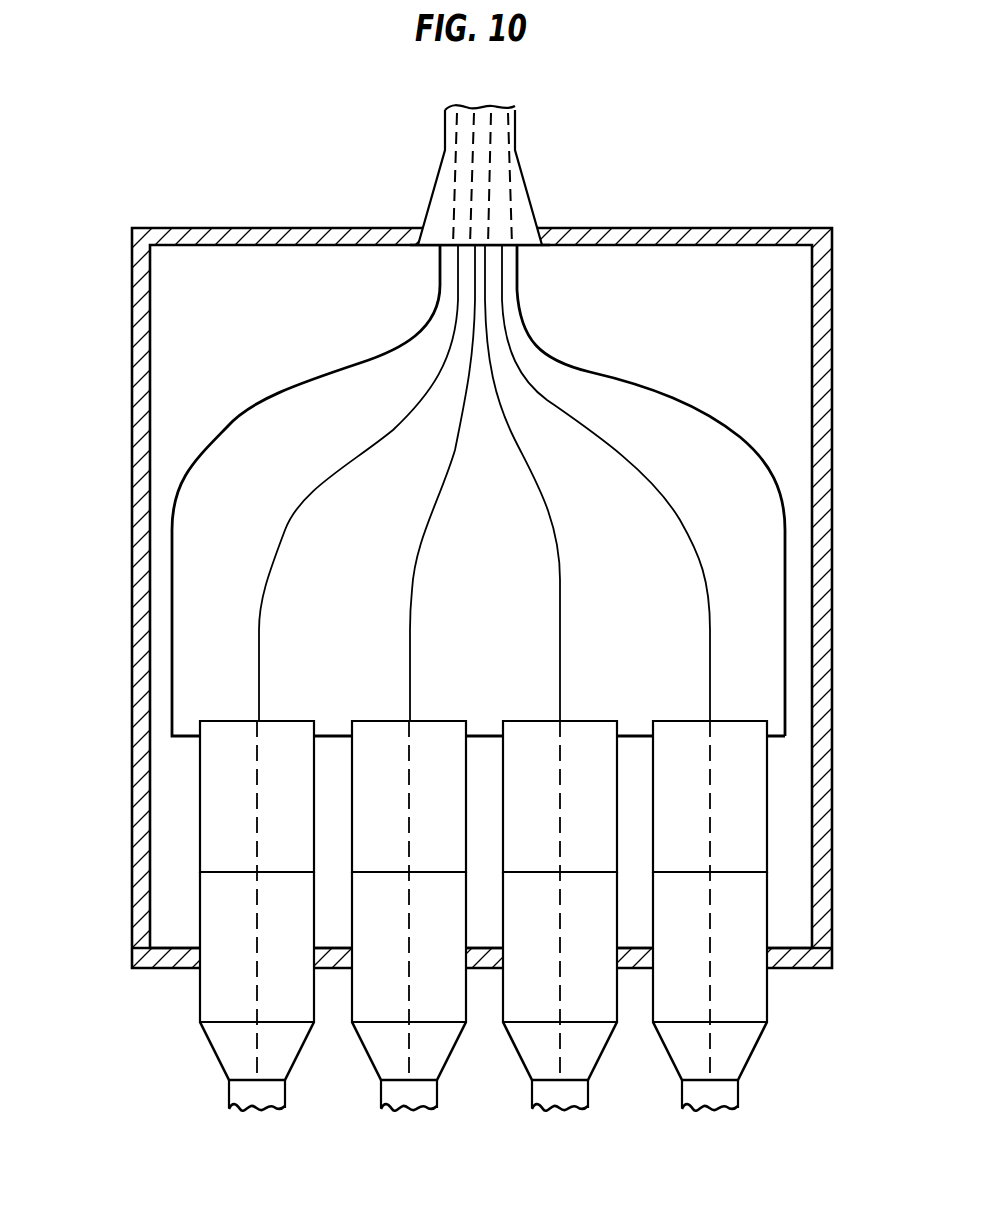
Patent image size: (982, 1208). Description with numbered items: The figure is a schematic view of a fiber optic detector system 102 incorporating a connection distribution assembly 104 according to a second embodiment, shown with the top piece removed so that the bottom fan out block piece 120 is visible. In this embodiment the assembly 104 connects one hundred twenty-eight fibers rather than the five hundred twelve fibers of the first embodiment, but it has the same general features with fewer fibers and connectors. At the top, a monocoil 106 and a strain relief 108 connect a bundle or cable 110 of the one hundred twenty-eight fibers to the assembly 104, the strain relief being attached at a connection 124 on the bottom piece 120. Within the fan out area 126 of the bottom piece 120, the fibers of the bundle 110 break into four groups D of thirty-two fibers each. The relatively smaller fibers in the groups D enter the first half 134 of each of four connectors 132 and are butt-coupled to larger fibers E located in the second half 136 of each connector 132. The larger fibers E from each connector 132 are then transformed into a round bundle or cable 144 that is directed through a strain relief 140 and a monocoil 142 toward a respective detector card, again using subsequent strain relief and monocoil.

The fiber optic detector system 102 is at (144, 127).
The connection distribution assembly 104 is at (108, 672).
The monocoil 106 is at (447, 140).
The strain relief 108 is at (533, 206).
The bundle or cable 110 is at (455, 122).
The bottom fan out block piece 120 is at (792, 752).
The connection for a strain relief 124 is at (424, 248).
The fan out area 126 is at (697, 430).
The connector 132 is at (792, 893).
The first half 134 is at (225, 805).
The second half 136 is at (213, 1000).
The strain relief 140 is at (230, 1048).
The monocoil 142 is at (288, 1094).
The round bundle or cable 144 is at (233, 1096).
The groups of fibers D is at (259, 627).
The larger fibers E is at (712, 1057).